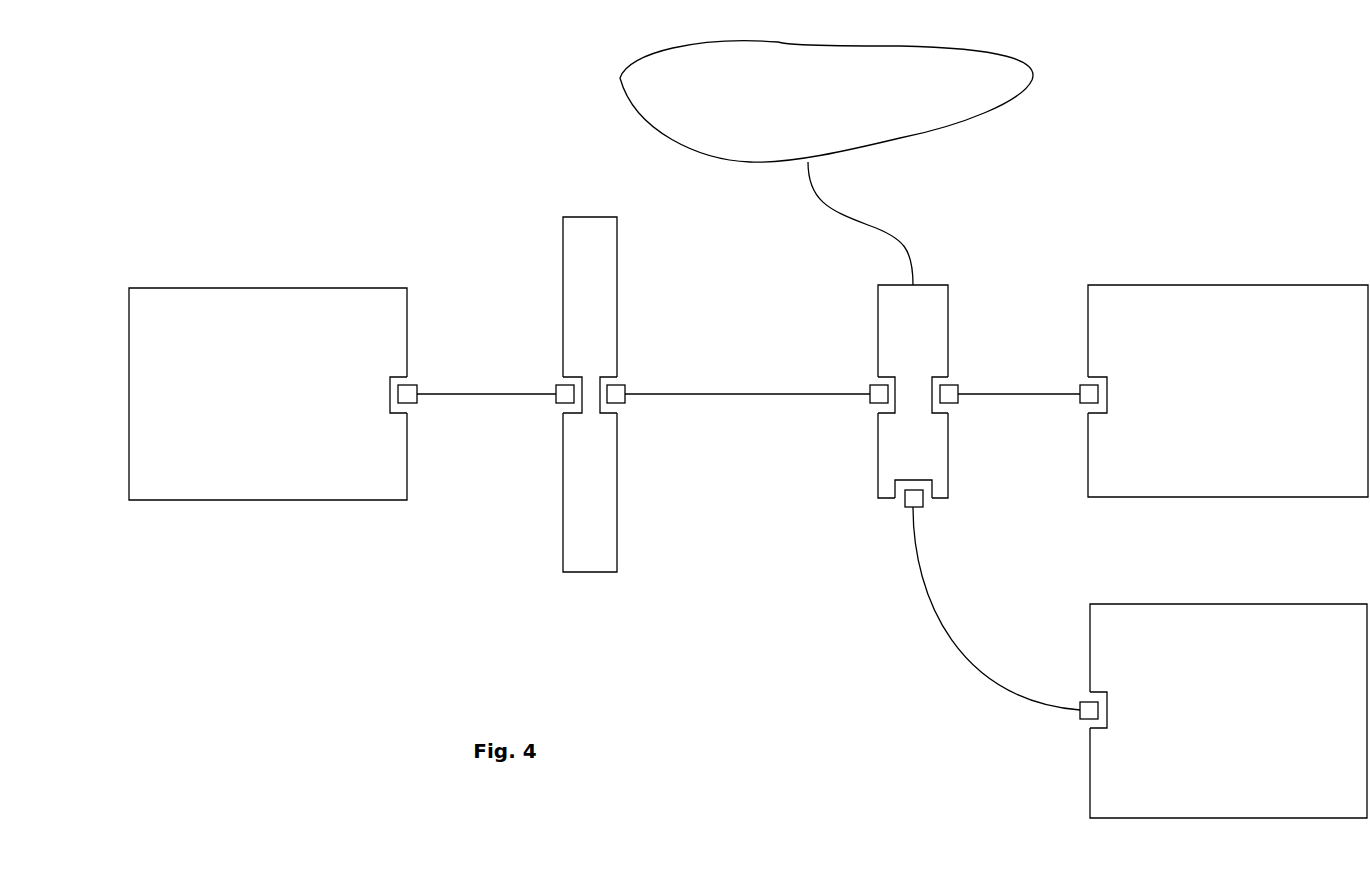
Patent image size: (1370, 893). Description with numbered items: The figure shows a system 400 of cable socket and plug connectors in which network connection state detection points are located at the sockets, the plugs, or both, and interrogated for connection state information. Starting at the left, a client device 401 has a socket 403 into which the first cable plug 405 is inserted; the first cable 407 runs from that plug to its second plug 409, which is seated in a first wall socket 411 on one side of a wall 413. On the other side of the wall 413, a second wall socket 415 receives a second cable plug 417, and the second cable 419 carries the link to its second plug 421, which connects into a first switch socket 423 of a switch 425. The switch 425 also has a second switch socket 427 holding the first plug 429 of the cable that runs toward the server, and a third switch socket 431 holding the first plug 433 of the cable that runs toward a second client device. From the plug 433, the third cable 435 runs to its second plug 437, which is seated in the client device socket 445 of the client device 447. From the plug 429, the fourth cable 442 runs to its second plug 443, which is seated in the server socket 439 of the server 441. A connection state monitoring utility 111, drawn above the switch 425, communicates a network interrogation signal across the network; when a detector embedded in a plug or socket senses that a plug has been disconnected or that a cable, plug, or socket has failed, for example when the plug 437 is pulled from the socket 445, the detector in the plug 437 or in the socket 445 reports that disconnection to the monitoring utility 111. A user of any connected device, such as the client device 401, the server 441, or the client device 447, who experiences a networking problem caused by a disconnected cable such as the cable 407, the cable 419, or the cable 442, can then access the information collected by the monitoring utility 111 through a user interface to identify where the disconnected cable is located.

The connection state monitoring utility 111 is at (793, 138).
The network system 400 is at (1165, 173).
The client device 401 is at (248, 435).
The socket 403 is at (391, 378).
The first cable plug 405 is at (404, 400).
The first cable 407 is at (487, 396).
The second plug of first cable 409 is at (571, 391).
The first wall socket 411 is at (575, 377).
The wall 413 is at (589, 223).
The second wall socket 415 is at (607, 377).
The second cable plug 417 is at (611, 391).
The second cable 419 is at (705, 394).
The second plug of second cable 421 is at (883, 391).
The first switch socket 423 is at (888, 377).
The switch 425 is at (894, 314).
The second switch socket 427 is at (937, 377).
The first plug of third cable 429 is at (944, 392).
The third switch socket 431 is at (948, 490).
The first plug of fourth cable 433 is at (912, 496).
The third cable 435 is at (947, 633).
The second plug of third cable 437 is at (1090, 706).
The server socket 439 is at (1097, 377).
The server 441 is at (1210, 416).
The fourth cable 442 is at (995, 394).
The second plug of fourth cable 443 is at (1088, 395).
The second client device socket 445 is at (1097, 692).
The client device 447 is at (1208, 736).